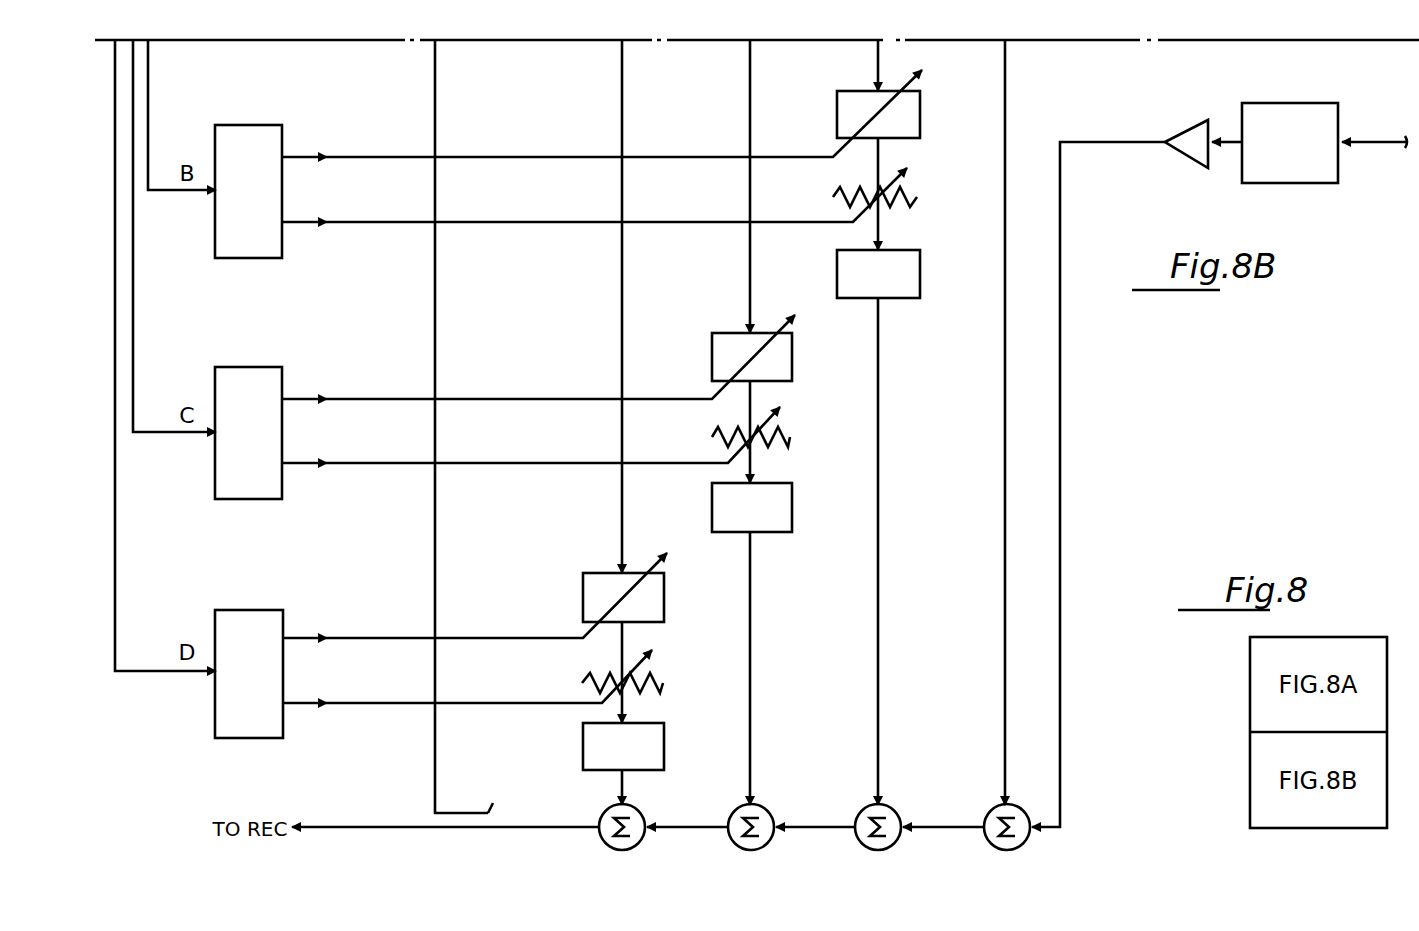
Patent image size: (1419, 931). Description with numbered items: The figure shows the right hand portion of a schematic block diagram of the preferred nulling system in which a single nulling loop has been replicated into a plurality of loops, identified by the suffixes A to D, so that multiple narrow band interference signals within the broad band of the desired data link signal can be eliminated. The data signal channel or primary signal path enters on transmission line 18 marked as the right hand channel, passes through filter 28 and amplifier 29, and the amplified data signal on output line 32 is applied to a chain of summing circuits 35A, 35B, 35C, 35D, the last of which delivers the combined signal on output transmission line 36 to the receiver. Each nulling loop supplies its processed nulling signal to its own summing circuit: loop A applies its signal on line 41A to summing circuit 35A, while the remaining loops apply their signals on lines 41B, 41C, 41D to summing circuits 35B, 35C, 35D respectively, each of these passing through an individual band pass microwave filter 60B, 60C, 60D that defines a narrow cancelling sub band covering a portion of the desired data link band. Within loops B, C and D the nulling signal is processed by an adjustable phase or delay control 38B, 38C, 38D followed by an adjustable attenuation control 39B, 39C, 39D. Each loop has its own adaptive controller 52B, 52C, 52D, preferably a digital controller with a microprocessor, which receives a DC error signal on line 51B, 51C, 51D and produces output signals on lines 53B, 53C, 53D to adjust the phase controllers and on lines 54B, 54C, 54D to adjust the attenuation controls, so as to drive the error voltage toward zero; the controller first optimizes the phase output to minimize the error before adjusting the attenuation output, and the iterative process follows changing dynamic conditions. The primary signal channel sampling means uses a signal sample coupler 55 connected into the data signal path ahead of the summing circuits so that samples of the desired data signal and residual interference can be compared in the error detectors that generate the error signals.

The transmission line 18 is at (1373, 150).
The filter 28 is at (1295, 183).
The amplifier 29 is at (1190, 150).
The output line 32 is at (1095, 141).
The summing circuit 35A is at (992, 812).
The summing circuit 35B is at (862, 812).
The summing circuit 35C is at (737, 812).
The summing circuit 35D is at (602, 815).
The output transmission line 36 is at (378, 826).
The adjustable phase control 38B is at (837, 113).
The adjustable phase control 38C is at (712, 350).
The adjustable phase control 38D is at (583, 590).
The adjustable attenuation control 39B is at (917, 197).
The adjustable attenuation control 39C is at (790, 437).
The adjustable attenuation control 39D is at (663, 683).
The output line 41A is at (1005, 605).
The output line 41B is at (879, 700).
The output line 41C is at (751, 722).
The output line 41D is at (626, 790).
The DC error signal line 51B is at (148, 130).
The DC error signal line 51C is at (133, 312).
The DC error signal line 51D is at (115, 572).
The adaptive controller 52B is at (240, 125).
The adaptive controller 52C is at (247, 366).
The adaptive controller 52D is at (250, 609).
The phase control output line 53B is at (350, 156).
The phase control output line 53C is at (362, 398).
The phase control output line 53D is at (362, 637).
The attenuation control output line 54B is at (358, 221).
The attenuation control output line 54C is at (362, 462).
The attenuation control output line 54D is at (362, 702).
The signal sample coupler 55 is at (460, 812).
The band pass microwave filter 60B is at (837, 258).
The band pass microwave filter 60C is at (712, 505).
The band pass microwave filter 60D is at (583, 745).